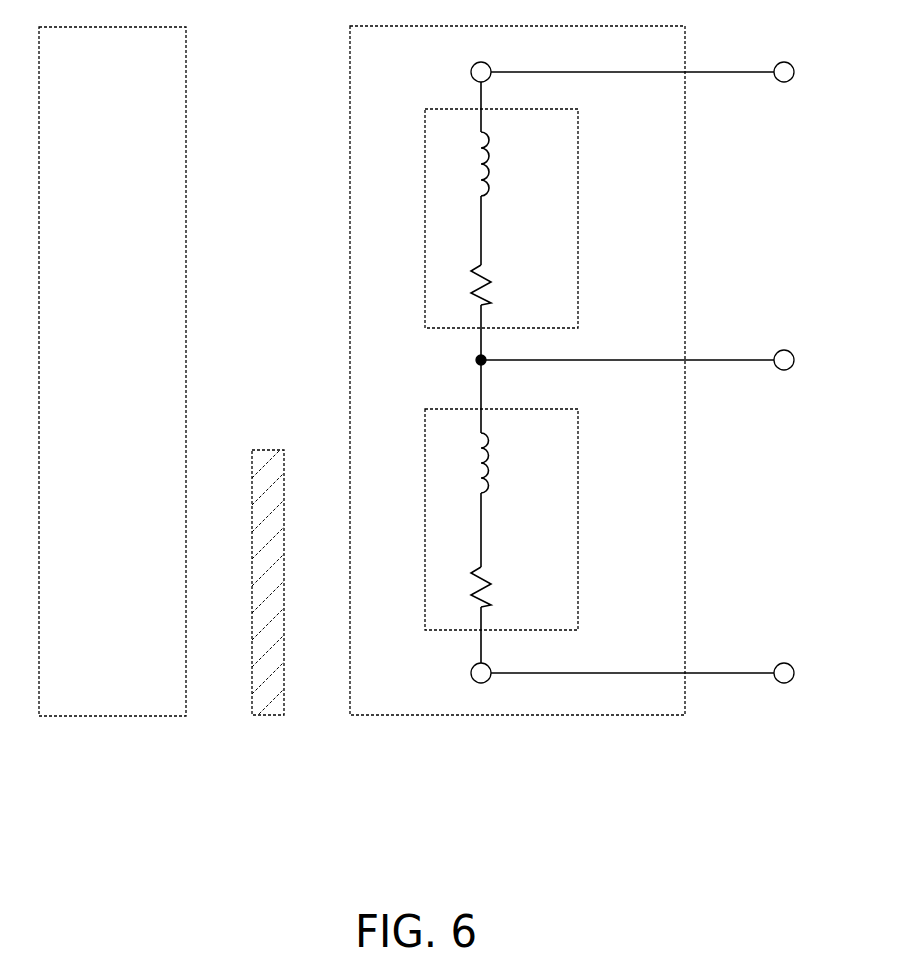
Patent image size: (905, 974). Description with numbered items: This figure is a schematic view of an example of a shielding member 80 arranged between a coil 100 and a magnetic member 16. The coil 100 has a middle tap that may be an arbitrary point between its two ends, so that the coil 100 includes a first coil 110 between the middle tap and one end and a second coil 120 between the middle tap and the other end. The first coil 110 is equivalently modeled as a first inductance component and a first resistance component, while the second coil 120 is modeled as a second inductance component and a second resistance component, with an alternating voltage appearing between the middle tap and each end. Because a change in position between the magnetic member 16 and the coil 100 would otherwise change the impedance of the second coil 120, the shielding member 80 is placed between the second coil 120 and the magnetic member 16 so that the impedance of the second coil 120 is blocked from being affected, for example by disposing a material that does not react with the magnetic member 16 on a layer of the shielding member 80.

The magnetic member 16 is at (90, 716).
The shielding member 80 is at (268, 716).
The coil 100 is at (579, 409).
The first coil 110 is at (578, 207).
The second coil 120 is at (578, 512).